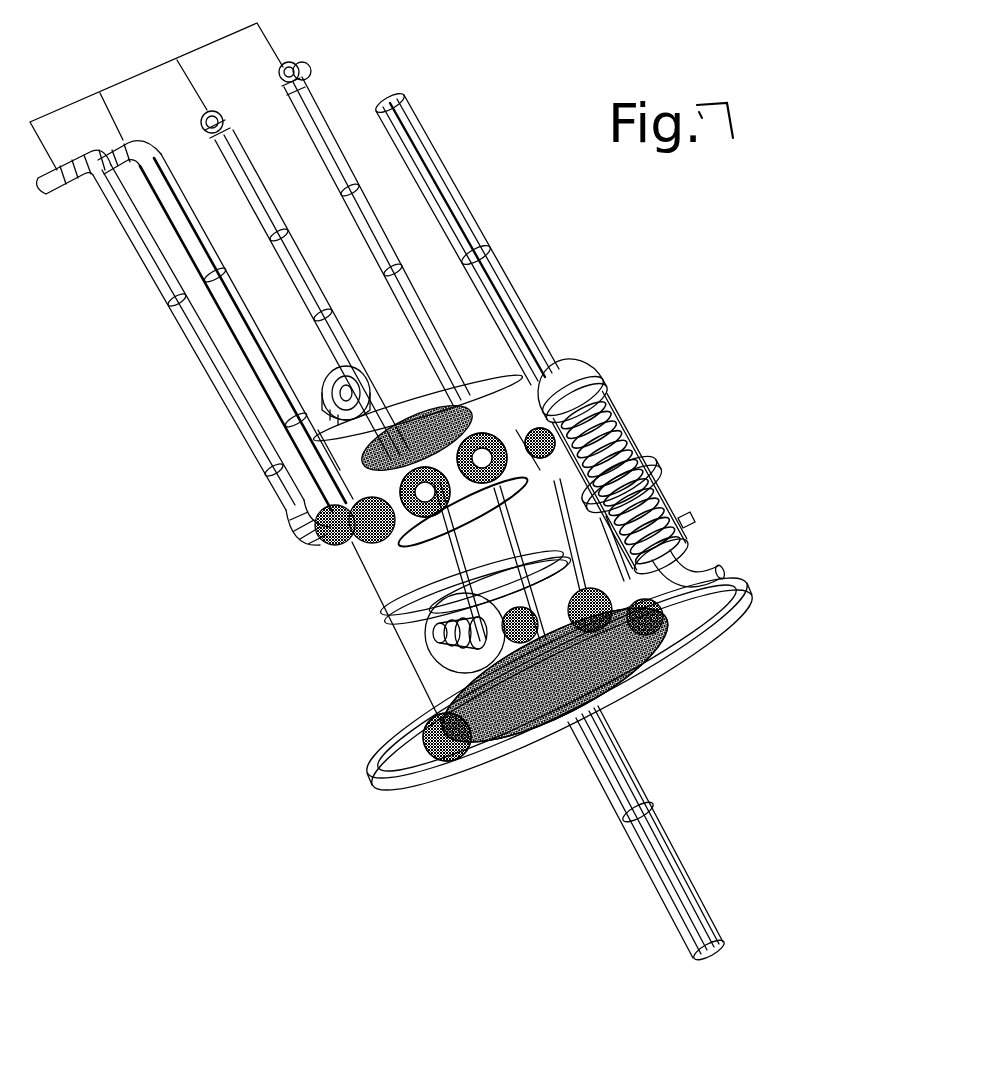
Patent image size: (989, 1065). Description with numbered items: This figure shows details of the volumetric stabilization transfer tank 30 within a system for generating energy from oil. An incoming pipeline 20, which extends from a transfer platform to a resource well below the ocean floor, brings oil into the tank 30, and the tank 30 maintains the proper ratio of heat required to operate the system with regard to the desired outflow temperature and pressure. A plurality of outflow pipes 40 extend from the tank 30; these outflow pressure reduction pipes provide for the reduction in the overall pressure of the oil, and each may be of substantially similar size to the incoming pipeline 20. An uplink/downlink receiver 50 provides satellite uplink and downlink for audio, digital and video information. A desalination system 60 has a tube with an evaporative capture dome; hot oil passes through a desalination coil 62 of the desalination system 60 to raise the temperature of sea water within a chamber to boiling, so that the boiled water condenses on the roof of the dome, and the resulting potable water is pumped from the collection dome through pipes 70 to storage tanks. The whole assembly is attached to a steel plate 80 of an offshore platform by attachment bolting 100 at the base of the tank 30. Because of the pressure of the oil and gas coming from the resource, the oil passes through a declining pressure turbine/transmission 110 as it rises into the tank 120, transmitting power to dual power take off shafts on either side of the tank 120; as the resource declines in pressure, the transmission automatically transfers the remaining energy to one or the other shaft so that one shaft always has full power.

The pipeline 20 is at (655, 808).
The volumetric stabilization transfer tank 30 is at (397, 632).
The outflow pipes 40 is at (140, 72).
The uplink/downlink receiver 50 is at (323, 388).
The desalination system 60 is at (605, 383).
The desalination coil 62 is at (650, 457).
The pipes 70 is at (483, 235).
The steel plate 80 is at (390, 790).
The attachment bolting 100 is at (400, 725).
The declining pressure turbine/transmission 110 is at (463, 647).
The tank 120 is at (683, 547).